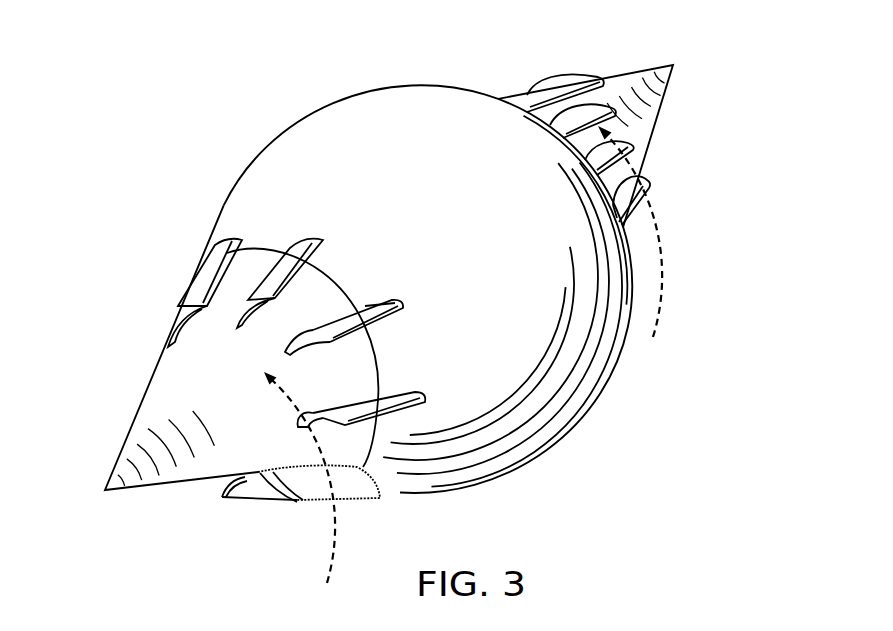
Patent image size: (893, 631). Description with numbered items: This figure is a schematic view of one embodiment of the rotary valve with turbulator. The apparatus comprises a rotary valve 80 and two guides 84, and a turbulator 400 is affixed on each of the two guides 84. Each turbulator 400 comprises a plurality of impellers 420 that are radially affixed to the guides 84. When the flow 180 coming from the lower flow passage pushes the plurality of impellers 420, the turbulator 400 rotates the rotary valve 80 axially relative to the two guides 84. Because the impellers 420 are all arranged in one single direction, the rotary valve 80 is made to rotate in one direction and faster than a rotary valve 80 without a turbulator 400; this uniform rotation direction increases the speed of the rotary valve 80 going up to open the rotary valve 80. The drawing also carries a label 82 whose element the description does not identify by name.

The rotary valve 80 is at (320, 92).
The spherical surface 82 is at (273, 172).
The guides 84 is at (618, 80).
The flow 180 is at (345, 547).
The turbulator 400 is at (180, 246).
The impellers 420 is at (553, 90).